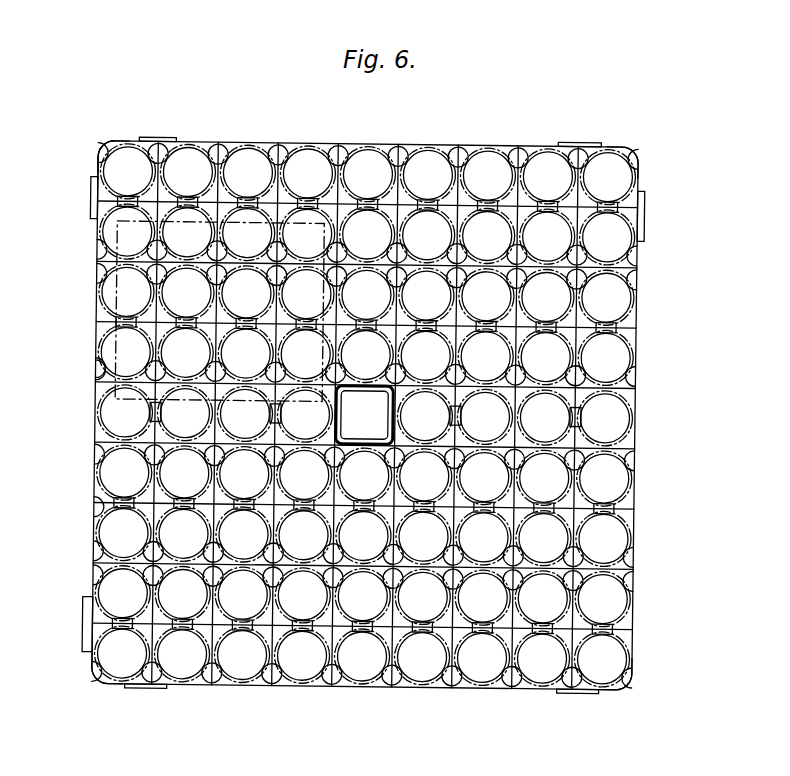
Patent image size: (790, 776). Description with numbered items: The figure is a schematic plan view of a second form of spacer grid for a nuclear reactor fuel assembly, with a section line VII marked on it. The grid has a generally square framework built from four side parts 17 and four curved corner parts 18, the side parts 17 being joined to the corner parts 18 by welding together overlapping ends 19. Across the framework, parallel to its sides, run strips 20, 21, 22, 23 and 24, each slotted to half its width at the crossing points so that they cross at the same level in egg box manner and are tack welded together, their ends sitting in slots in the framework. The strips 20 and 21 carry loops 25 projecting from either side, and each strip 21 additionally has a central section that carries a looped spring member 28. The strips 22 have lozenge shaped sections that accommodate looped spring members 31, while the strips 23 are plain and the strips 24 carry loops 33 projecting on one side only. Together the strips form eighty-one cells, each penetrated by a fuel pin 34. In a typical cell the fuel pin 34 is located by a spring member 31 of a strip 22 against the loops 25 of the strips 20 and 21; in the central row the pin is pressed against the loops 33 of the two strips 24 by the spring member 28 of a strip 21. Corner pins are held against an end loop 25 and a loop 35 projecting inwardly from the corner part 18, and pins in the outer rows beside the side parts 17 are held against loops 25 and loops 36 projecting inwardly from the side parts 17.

The side part 17 is at (355, 143).
The corner part 18 is at (97, 172).
The overlapping end 19 is at (92, 210).
The strip 20 is at (273, 148).
The strip 21 is at (190, 190).
The strip 22 is at (548, 196).
The plain strip 23 is at (115, 290).
The strip 24 is at (100, 369).
The loop 25 is at (170, 160).
The looped spring member 28 is at (95, 428).
The looped spring member 31 is at (190, 195).
The loop 33 is at (147, 410).
The fuel pin 34 is at (117, 133).
The loop 35 is at (640, 150).
The loop 36 is at (96, 378).
The section line VII is at (113, 290).